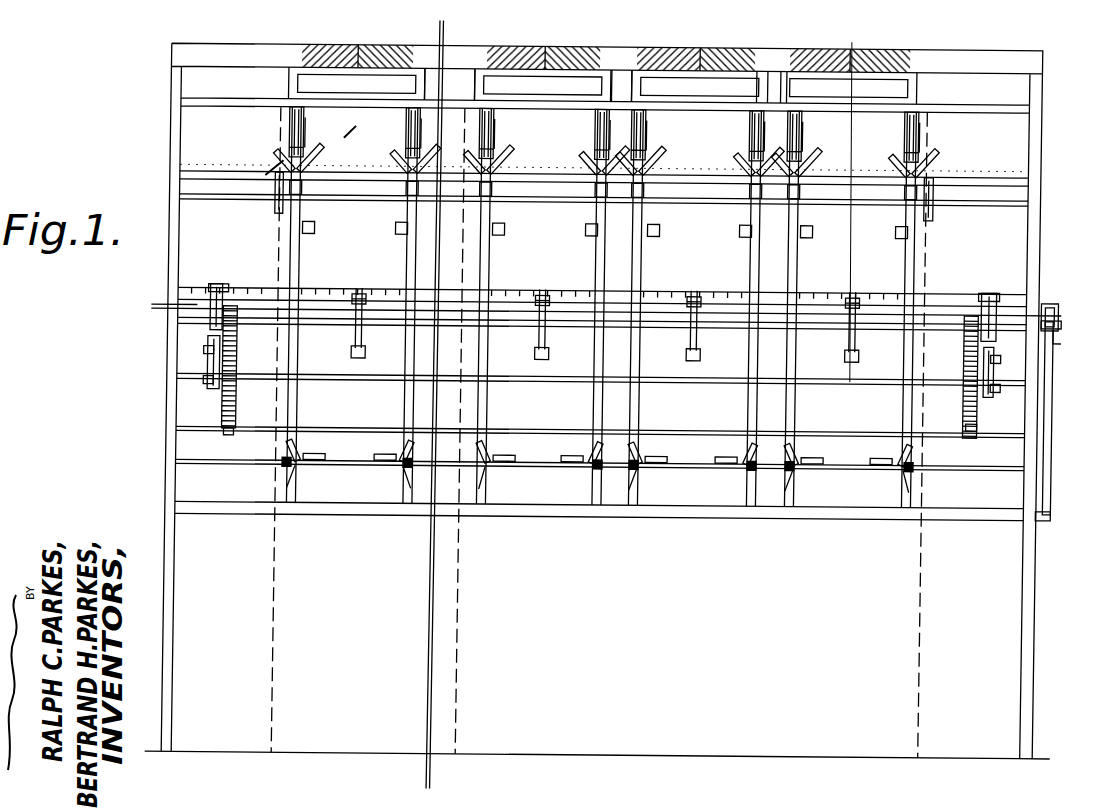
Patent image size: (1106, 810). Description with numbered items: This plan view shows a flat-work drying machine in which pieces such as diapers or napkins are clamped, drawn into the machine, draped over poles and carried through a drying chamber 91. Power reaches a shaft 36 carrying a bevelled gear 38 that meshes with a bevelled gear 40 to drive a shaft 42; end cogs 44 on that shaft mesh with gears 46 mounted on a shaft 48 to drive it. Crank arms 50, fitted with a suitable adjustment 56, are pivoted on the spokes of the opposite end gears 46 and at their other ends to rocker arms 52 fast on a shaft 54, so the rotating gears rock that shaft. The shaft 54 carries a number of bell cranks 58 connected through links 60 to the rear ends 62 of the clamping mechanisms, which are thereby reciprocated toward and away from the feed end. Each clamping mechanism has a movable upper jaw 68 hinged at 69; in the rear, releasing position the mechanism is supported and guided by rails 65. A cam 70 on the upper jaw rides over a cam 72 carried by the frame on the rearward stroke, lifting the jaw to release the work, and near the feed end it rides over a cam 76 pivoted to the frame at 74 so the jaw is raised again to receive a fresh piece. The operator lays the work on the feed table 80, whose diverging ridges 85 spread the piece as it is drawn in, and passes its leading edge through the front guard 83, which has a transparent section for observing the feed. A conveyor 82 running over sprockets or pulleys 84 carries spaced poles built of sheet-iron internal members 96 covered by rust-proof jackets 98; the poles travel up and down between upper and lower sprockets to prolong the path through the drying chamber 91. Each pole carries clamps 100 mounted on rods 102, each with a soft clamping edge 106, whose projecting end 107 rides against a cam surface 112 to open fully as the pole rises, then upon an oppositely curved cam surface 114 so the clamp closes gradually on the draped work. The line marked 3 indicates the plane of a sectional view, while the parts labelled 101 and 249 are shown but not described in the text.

The section line 3- 3 is at (832, 372).
The shaft 36 is at (1052, 462).
The bevelled gear 38 is at (1060, 322).
The bevelled gear 40 is at (1056, 332).
The shaft 42 is at (268, 328).
The end cogs 44 is at (235, 308).
The gears 46 is at (230, 438).
The shaft 48 is at (266, 383).
The crank arms 50 is at (205, 340).
The rocker arms 52 is at (170, 312).
The shaft 54 is at (214, 286).
The adjustment 56 is at (203, 370).
The bell cranks 58 is at (362, 348).
The links 60 is at (352, 343).
The rear ends 62 is at (355, 296).
The rails 65 is at (735, 190).
The movable upper jaw 68 is at (603, 219).
The hinge 69 is at (514, 290).
The cam 70 is at (312, 232).
The cam 72 is at (298, 256).
The pivot 74 is at (300, 135).
The cam 76 is at (290, 138).
The feed table 80 is at (450, 55).
The conveyor 82 is at (276, 596).
The front guard 83 is at (602, 85).
The sprockets or pulleys 84 is at (270, 212).
The diverging ridges 85 is at (353, 47).
The drying chamber 91 is at (599, 630).
The internal members 96 is at (737, 230).
The rust-proof jackets 98 is at (694, 183).
The clamps 100 is at (905, 160).
The brace 101 is at (285, 165).
The rods 102 is at (590, 186).
The clamping edge 106 is at (300, 182).
The projecting end 107 is at (320, 165).
The cam surface 112 is at (295, 160).
The oppositely curved cam surface 114 is at (320, 150).
The joint 249 is at (283, 465).